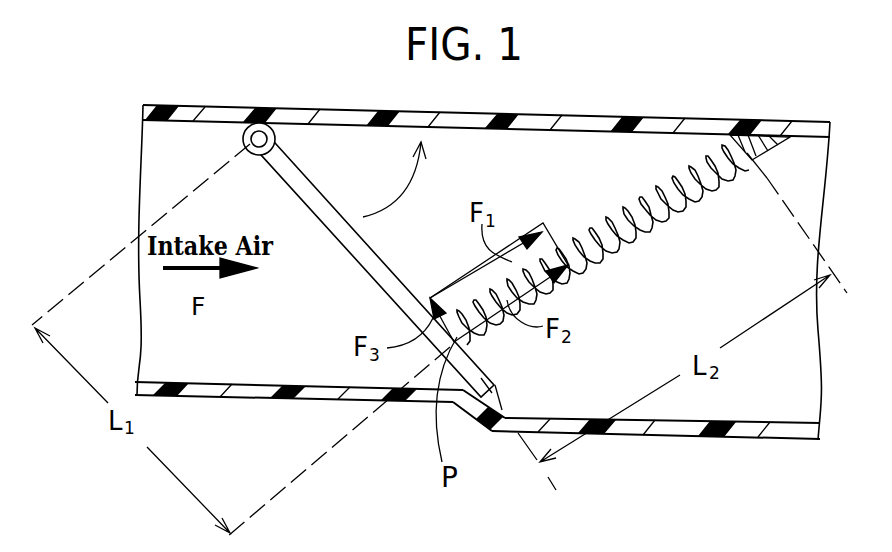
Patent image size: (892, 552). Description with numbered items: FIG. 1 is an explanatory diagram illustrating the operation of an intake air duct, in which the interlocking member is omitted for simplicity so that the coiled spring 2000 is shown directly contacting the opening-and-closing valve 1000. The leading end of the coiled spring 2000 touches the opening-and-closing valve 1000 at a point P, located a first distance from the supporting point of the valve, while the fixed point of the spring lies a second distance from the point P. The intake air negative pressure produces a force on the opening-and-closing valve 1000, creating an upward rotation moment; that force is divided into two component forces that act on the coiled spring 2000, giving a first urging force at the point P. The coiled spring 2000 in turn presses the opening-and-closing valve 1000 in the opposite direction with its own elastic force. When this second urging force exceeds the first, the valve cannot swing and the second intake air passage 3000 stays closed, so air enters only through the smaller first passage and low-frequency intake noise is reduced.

The opening-and-closing valve 1000 is at (316, 214).
The coiled spring 2000 is at (613, 208).
The second intake air passage 3000 is at (690, 408).